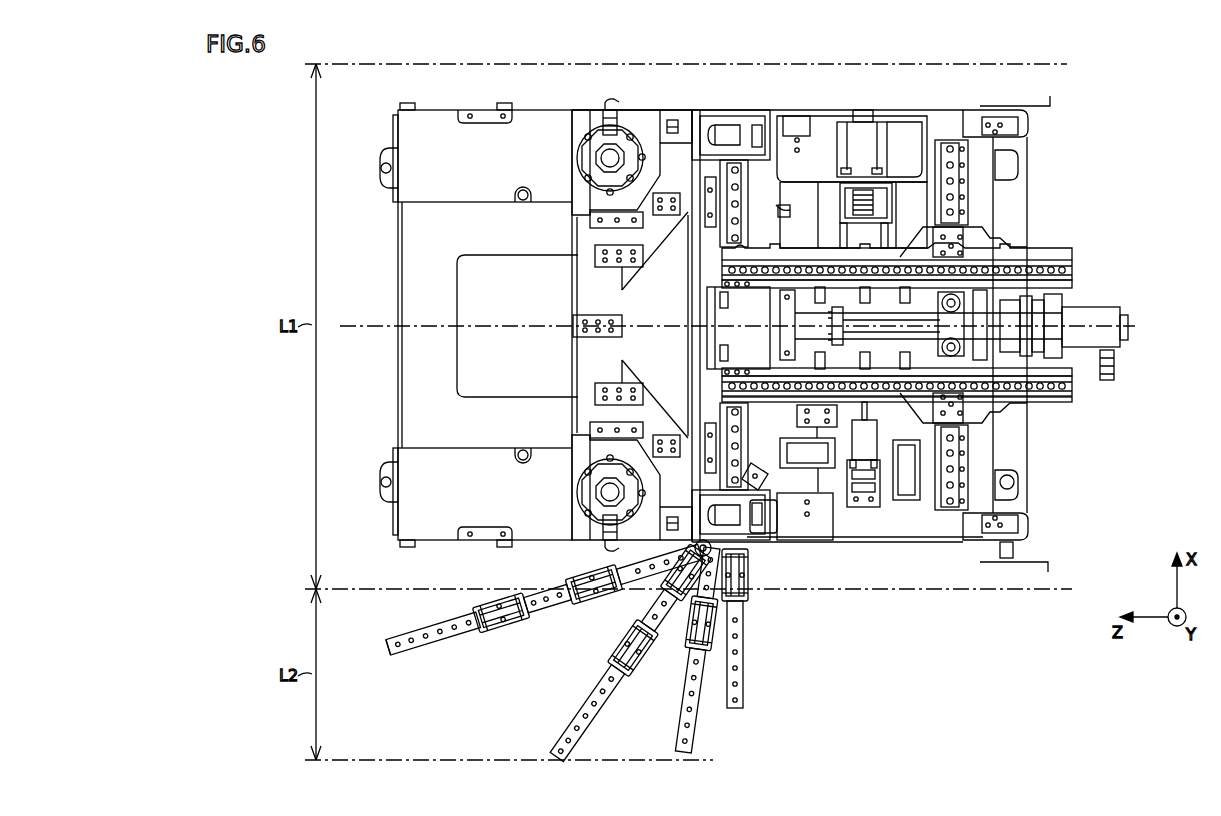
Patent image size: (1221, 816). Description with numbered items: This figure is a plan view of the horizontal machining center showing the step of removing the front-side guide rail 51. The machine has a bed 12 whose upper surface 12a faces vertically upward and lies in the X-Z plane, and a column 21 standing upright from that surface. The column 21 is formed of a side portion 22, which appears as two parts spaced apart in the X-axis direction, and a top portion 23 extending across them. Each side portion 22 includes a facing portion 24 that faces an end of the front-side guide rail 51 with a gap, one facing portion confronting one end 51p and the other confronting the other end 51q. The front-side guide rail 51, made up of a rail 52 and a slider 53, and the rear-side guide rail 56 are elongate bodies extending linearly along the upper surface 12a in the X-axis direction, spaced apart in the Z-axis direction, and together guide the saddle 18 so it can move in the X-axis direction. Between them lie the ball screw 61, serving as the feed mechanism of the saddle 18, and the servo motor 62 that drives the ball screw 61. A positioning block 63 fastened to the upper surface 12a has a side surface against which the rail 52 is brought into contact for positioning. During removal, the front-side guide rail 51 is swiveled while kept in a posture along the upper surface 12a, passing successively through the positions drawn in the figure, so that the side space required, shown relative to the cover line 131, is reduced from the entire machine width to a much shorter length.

The cover line 131 is at (1050, 62).
The bed 12 is at (883, 547).
The upper surface 12a is at (742, 245).
The saddle 18 is at (1040, 258).
The column 21 is at (636, 102).
The side portion 22 is at (676, 108).
The top portion 23 is at (593, 360).
The facing portion 24 is at (746, 117).
The front-side guide rail 51 is at (606, 652).
The one end 51p is at (734, 168).
The other end 51q is at (388, 647).
The rail 52 is at (544, 599).
The slider 53 is at (783, 210).
The rear-side guide rail 56 is at (974, 468).
The ball screw 61 is at (867, 440).
The servo motor 62 is at (888, 143).
The positioning block 63 is at (750, 438).